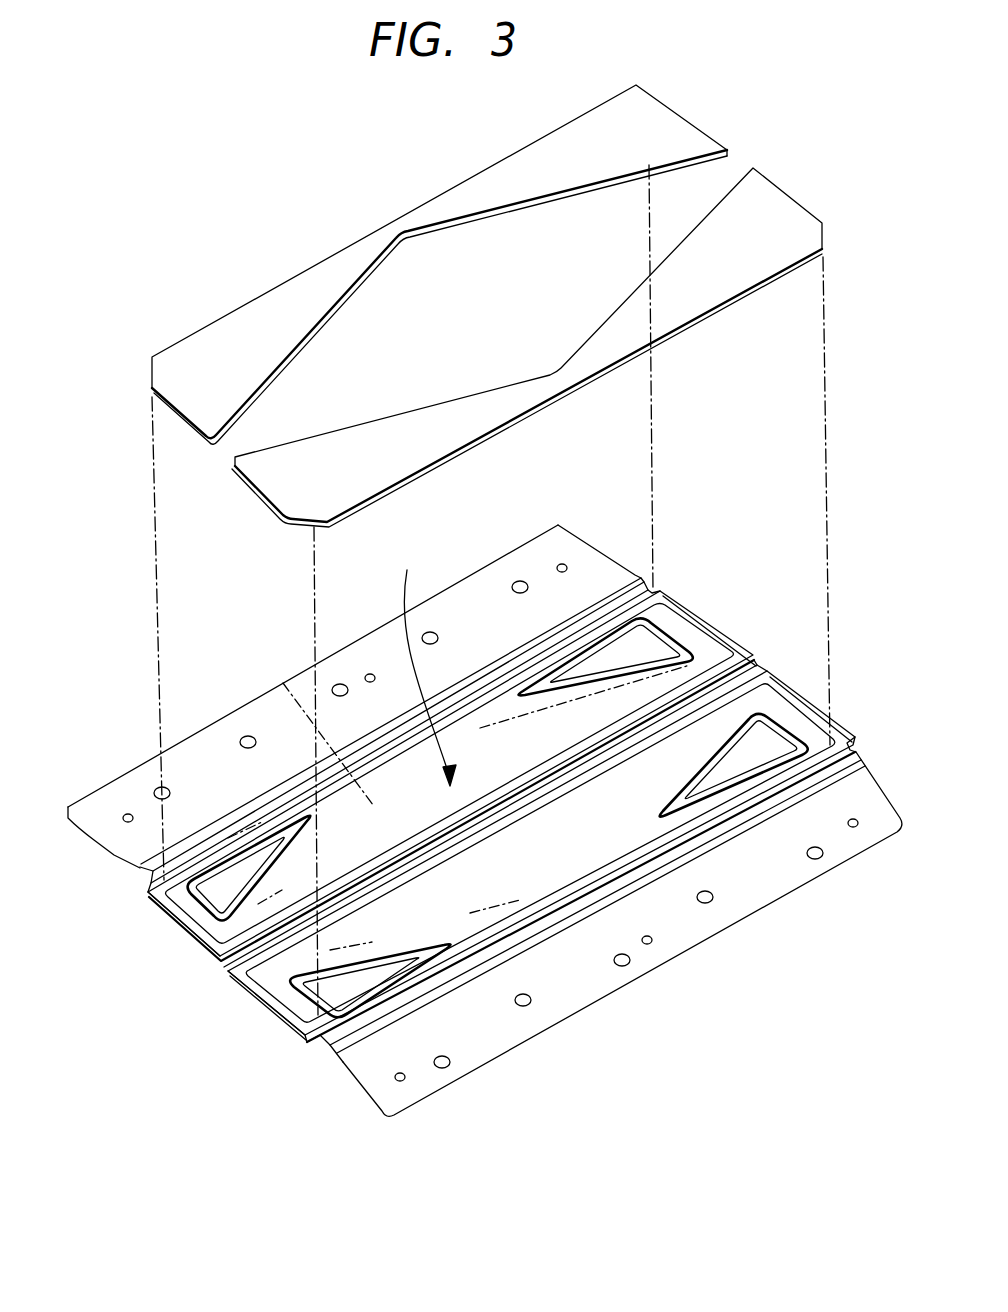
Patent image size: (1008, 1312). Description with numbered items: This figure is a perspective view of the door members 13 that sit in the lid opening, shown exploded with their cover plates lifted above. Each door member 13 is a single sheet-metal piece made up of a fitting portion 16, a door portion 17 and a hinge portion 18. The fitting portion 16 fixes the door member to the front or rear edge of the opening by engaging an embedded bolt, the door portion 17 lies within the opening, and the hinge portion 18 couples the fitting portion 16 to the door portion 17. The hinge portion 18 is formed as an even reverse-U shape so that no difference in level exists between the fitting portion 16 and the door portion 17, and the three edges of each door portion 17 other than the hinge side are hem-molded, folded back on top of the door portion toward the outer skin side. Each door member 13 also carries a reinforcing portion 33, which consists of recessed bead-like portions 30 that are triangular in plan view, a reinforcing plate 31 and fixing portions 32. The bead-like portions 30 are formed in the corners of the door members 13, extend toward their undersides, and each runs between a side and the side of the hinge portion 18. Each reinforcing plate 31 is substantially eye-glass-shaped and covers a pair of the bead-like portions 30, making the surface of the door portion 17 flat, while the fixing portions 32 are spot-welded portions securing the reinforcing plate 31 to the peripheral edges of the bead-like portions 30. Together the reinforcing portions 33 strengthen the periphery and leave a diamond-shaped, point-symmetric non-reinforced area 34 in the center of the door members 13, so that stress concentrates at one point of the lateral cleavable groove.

The door member 13 is at (72, 915).
The fitting portion 16 is at (123, 842).
The door portion 17 is at (172, 928).
The hinge portion 18 is at (140, 880).
The bead-like portion 30 is at (760, 745).
The reinforcing plate 31 is at (319, 270).
The fixing portion 32 is at (283, 683).
The reinforcing portion 33 is at (364, 827).
The non-reinforced area 34 is at (426, 664).